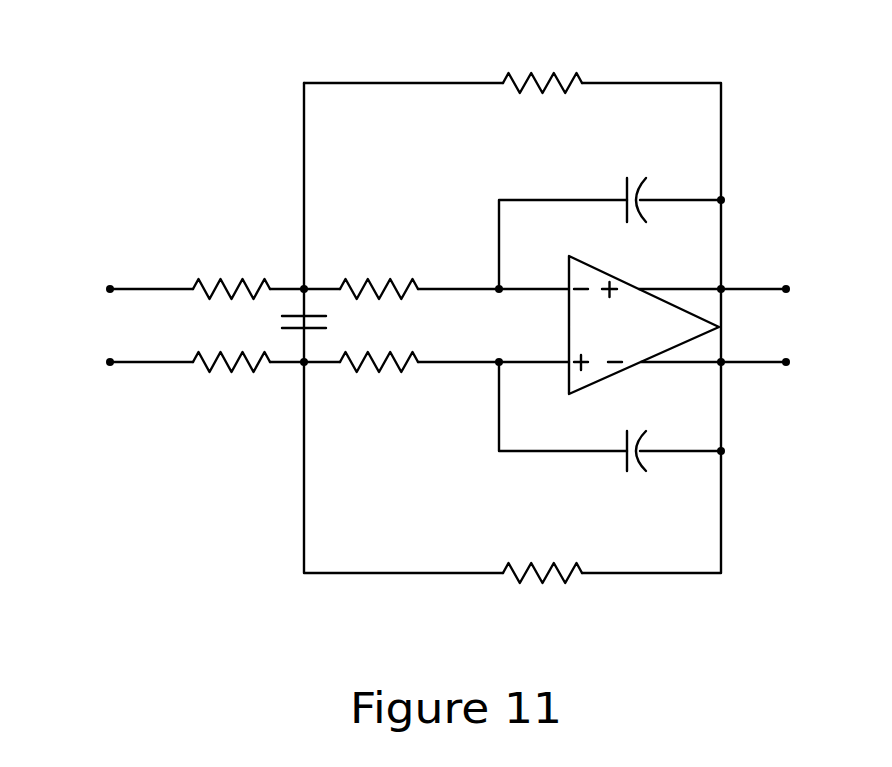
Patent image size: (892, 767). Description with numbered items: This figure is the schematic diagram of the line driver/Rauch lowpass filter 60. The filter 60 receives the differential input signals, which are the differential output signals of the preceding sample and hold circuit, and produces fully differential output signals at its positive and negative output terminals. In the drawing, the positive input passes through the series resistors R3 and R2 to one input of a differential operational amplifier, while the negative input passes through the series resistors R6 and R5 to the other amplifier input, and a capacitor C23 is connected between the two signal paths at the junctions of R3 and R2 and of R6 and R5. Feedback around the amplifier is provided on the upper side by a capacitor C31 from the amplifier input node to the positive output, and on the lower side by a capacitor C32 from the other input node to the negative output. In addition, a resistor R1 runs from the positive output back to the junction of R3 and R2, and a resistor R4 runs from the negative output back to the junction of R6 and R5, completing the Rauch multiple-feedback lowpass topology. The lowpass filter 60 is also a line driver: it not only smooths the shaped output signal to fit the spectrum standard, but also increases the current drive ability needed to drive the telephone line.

The line driver/Rauch lowpass filter 60 is at (304, 132).
The feedback resistor R1 is at (542, 67).
The input resistor R2 is at (379, 272).
The input resistor R3 is at (231, 272).
The feedback resistor R4 is at (542, 593).
The input resistor R5 is at (379, 380).
The input resistor R6 is at (231, 380).
The input capacitor C23 is at (276, 324).
The feedback capacitor C31 is at (638, 182).
The feedback capacitor C32 is at (638, 470).